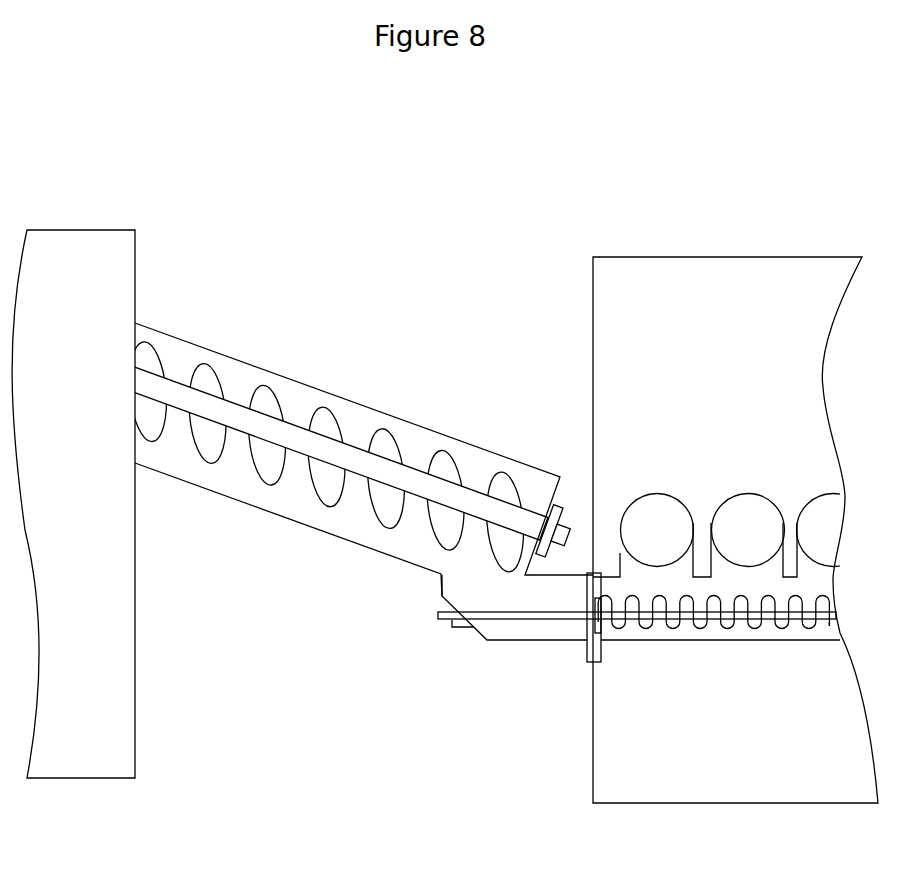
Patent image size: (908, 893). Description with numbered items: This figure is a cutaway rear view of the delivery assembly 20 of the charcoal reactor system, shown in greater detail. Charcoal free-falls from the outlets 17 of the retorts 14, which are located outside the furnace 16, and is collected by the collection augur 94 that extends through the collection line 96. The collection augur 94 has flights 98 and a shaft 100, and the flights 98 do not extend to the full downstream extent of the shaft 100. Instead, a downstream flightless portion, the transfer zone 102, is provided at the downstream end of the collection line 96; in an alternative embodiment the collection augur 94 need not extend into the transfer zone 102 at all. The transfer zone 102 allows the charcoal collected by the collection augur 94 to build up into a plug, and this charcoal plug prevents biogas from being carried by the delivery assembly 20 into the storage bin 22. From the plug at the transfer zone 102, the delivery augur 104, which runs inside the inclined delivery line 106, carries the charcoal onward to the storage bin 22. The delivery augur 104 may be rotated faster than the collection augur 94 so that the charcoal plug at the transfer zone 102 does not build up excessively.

The delivery assembly 20 is at (356, 712).
The storage bin 22 is at (135, 255).
The furnace 16 is at (748, 257).
The outlets 17 is at (620, 553).
The retorts 14 is at (675, 495).
The collection augur 94 is at (820, 630).
The collection line 96 is at (750, 641).
The flights 98 is at (698, 629).
The shaft 100 is at (560, 620).
The transfer zone 102 is at (470, 594).
The delivery augur 104 is at (350, 416).
The delivery line 106 is at (230, 357).